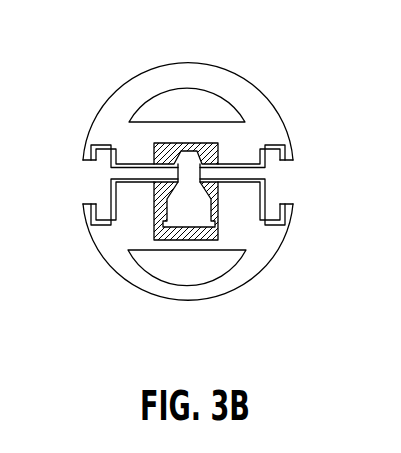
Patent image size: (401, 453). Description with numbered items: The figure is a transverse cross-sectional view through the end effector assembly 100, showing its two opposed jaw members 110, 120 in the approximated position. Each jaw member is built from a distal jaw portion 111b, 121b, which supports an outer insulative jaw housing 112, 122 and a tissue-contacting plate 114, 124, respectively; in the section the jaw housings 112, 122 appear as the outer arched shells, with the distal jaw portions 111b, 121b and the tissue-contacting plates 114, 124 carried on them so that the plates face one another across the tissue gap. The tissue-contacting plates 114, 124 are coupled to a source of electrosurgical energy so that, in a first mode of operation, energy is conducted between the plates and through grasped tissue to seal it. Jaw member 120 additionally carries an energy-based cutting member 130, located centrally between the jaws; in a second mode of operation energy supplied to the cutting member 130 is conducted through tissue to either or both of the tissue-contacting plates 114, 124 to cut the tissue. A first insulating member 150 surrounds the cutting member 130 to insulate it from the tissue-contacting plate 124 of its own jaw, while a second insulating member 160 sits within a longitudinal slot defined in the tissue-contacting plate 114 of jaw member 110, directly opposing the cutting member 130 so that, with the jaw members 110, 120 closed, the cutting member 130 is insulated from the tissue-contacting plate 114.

The end effector assembly 100 is at (256, 54).
The jaw member 110 is at (115, 70).
The distal jaw portion 111b is at (188, 105).
The outer insulative jaw housing 112 is at (242, 92).
The tissue-contacting plate 114 is at (253, 174).
The jaw member 120 is at (109, 289).
The distal jaw portion 121b is at (193, 263).
The outer insulative jaw housing 122 is at (260, 250).
The tissue-contacting plate 124 is at (253, 182).
The energy-based cutting member 130 is at (183, 201).
The first insulating member 150 is at (183, 230).
The second insulating member 160 is at (183, 150).